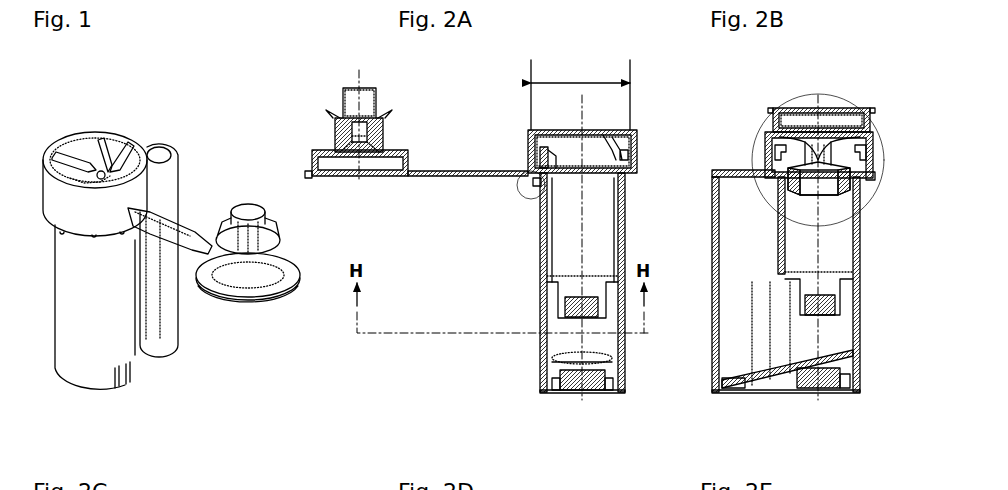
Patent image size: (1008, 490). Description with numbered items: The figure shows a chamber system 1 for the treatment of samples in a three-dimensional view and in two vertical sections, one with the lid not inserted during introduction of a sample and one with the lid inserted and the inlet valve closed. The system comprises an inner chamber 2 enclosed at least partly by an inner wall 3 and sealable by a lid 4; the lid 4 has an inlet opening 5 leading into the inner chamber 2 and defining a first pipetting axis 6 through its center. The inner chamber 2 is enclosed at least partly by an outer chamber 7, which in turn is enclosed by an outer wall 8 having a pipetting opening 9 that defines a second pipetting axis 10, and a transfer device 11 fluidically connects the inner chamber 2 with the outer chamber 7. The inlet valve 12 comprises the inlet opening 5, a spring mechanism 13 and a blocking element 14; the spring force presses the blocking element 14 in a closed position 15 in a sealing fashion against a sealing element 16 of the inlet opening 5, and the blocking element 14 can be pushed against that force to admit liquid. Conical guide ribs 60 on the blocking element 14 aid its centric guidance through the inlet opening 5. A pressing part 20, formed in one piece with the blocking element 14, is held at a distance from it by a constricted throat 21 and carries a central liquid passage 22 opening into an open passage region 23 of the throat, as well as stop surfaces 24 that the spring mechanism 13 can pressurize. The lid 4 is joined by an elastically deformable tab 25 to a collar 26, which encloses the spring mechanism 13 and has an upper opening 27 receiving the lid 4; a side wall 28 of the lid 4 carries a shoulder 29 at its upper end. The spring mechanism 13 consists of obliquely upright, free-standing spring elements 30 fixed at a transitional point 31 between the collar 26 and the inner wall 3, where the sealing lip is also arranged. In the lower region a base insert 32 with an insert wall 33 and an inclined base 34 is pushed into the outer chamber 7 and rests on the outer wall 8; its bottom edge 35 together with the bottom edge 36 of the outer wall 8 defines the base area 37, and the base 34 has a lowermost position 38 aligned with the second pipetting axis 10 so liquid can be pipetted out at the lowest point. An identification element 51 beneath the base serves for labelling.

In FIG. 1, the chamber system 1 is at (195, 82).
In FIG. 2A, the chamber system 1 is at (402, 356).
In FIG. 2B, the chamber system 1 is at (714, 74).
In FIG. 2A, the inner chamber 2 is at (572, 253).
In FIG. 2B, the inner chamber 2 is at (840, 251).
In FIG. 2A, the inner wall 3 is at (540, 226).
In FIG. 2B, the inner wall 3 is at (773, 223).
In FIG. 1, the lid 4 is at (237, 330).
In FIG. 2A, the lid 4 is at (373, 157).
In FIG. 2B, the lid 4 is at (792, 127).
In FIG. 1, the inlet opening 5 is at (97, 170).
In FIG. 2A, the inlet opening 5 is at (606, 166).
In FIG. 2A, the first pipetting axis 6 is at (583, 118).
In FIG. 2B, the outer chamber 7 is at (769, 251).
In FIG. 2B, the outer wall 8 is at (713, 252).
In FIG. 1, the pipetting opening 9 is at (155, 163).
In FIG. 2B, the pipetting opening 9 is at (740, 172).
In FIG. 2B, the second pipetting axis 10 is at (745, 99).
In FIG. 2A, the transfer device 11 is at (565, 305).
In FIG. 2B, the transfer device 11 is at (803, 303).
In FIG. 2B, the inlet valve 12 is at (756, 188).
In FIG. 2A, the spring mechanism 13 is at (612, 152).
In FIG. 1, the blocking element 14 is at (222, 246).
In FIG. 2A, the blocking element 14 is at (385, 116).
In FIG. 2B, the closed position 15 is at (866, 208).
In FIG. 2A, the sealing element 16 is at (520, 186).
In FIG. 2A, the pressing part 20 is at (349, 150).
In FIG. 1, the constricted throat 21 is at (260, 256).
In FIG. 2A, the constricted throat 21 is at (337, 130).
In FIG. 2B, the central liquid passage 22 is at (808, 120).
In FIG. 1, the open passage region 23 is at (240, 262).
In FIG. 2B, the open passage region 23 is at (805, 150).
In FIG. 1, the stop surfaces 24 is at (206, 250).
In FIG. 2A, the stop surfaces 24 is at (322, 147).
In FIG. 1, the elastically deformable tab 25 is at (165, 228).
In FIG. 2A, the elastically deformable tab 25 is at (478, 168).
In FIG. 1, the collar 26 is at (94, 202).
In FIG. 2A, the collar 26 is at (636, 145).
In FIG. 2B, the collar 26 is at (766, 152).
In FIG. 2A, the upper opening 27 is at (580, 95).
In FIG. 1, the side wall 28 is at (257, 295).
In FIG. 2A, the side wall 28 is at (409, 165).
In FIG. 1, the shoulder 29 is at (264, 282).
In FIG. 2A, the shoulder 29 is at (313, 179).
In FIG. 1, the spring elements 30 is at (68, 155).
In FIG. 2A, the spring elements 30 is at (556, 130).
In FIG. 2B, the spring elements 30 is at (838, 128).
In FIG. 1, the transitional point 31 is at (108, 164).
In FIG. 2A, the transitional point 31 is at (630, 174).
In FIG. 2B, the transitional point 31 is at (802, 241).
In FIG. 2A, the base insert 32 is at (515, 365).
In FIG. 2B, the base insert 32 is at (697, 365).
In FIG. 2A, the insert wall 33 is at (548, 330).
In FIG. 2B, the insert wall 33 is at (716, 330).
In FIG. 2A, the base 34 is at (556, 372).
In FIG. 2B, the base 34 is at (782, 370).
In FIG. 2A, the bottom edge 35 is at (546, 394).
In FIG. 2B, the bottom edge 35 is at (850, 394).
In FIG. 1, the bottom edge 36 is at (126, 384).
In FIG. 2A, the bottom edge 36 is at (620, 394).
In FIG. 2B, the bottom edge 36 is at (717, 394).
In FIG. 2A, the base area 37 is at (563, 394).
In FIG. 2B, the base area 37 is at (762, 394).
In FIG. 2B, the lowermost position 38 is at (742, 378).
In FIG. 2A, the identification element 51 is at (594, 378).
In FIG. 2B, the identification element 51 is at (806, 390).
In FIG. 1, the guide ribs 60 is at (247, 204).